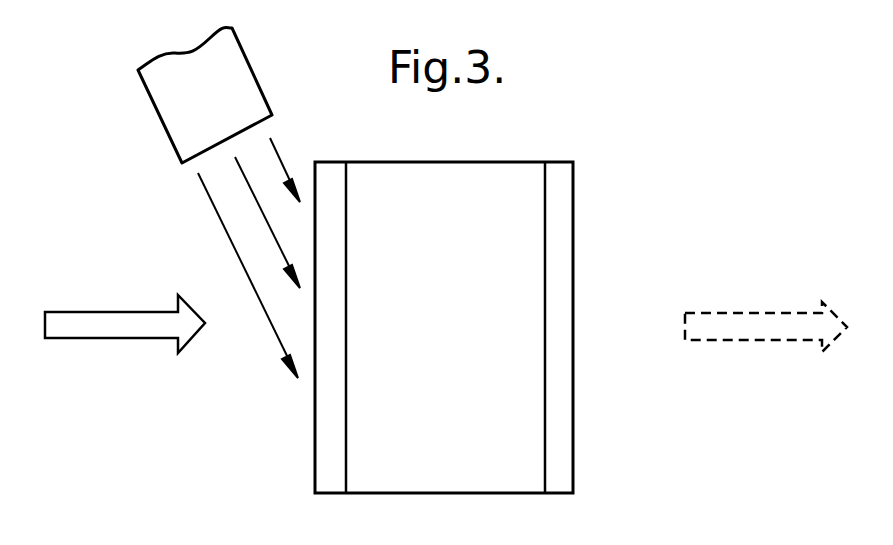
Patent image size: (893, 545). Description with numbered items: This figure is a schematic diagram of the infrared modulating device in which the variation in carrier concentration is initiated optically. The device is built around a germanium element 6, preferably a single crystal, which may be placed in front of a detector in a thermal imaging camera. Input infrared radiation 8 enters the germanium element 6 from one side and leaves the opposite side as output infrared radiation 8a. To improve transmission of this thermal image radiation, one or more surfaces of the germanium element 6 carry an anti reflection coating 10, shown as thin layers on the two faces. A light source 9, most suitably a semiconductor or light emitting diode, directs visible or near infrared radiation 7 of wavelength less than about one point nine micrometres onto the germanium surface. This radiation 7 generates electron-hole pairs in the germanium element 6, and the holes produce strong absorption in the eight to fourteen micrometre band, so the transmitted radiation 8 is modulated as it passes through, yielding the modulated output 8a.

The germanium element 6 is at (510, 210).
The visible or near infrared radiation 7 is at (279, 156).
The input infrared radiation 8 is at (108, 328).
The output infrared radiation 8a is at (741, 321).
The light source 9 is at (173, 112).
The anti reflection coating 10 is at (560, 272).